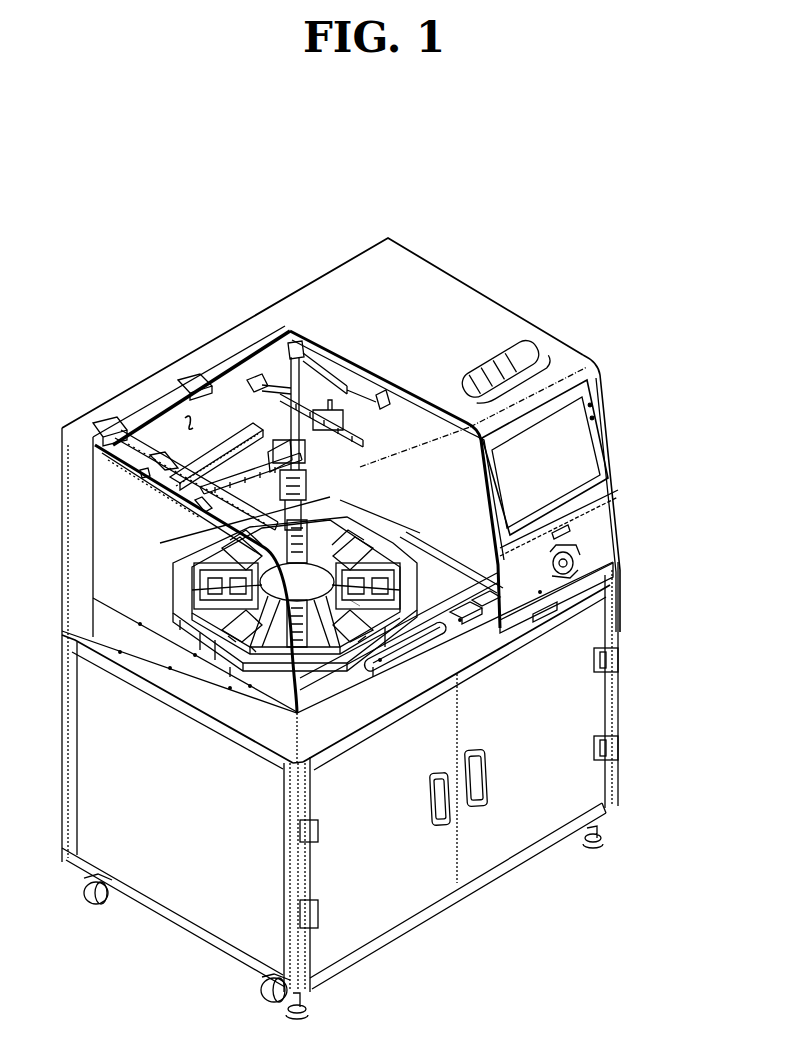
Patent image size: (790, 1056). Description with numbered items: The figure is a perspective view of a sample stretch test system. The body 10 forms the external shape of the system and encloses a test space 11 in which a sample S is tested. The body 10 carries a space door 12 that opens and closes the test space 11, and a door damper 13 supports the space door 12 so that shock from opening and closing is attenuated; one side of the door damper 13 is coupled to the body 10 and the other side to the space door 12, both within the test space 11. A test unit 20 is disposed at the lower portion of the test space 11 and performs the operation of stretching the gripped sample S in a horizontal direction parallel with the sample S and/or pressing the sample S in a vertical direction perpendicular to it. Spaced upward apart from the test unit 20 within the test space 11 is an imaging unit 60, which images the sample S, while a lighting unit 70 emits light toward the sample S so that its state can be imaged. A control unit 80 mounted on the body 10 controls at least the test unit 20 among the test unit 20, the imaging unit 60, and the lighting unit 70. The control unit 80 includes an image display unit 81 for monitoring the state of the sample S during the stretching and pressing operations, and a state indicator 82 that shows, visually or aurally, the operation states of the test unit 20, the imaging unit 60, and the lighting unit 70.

The body 10 is at (118, 377).
The test space 11 is at (178, 445).
The space door 12 is at (140, 432).
The door damper 13 is at (310, 556).
The test unit 20 is at (430, 572).
The imaging unit 60 is at (280, 434).
The lighting unit 70 is at (223, 431).
The control unit 80 is at (495, 288).
The image display unit 81 is at (577, 443).
The state indicator 82 is at (527, 352).
The sample S is at (352, 574).